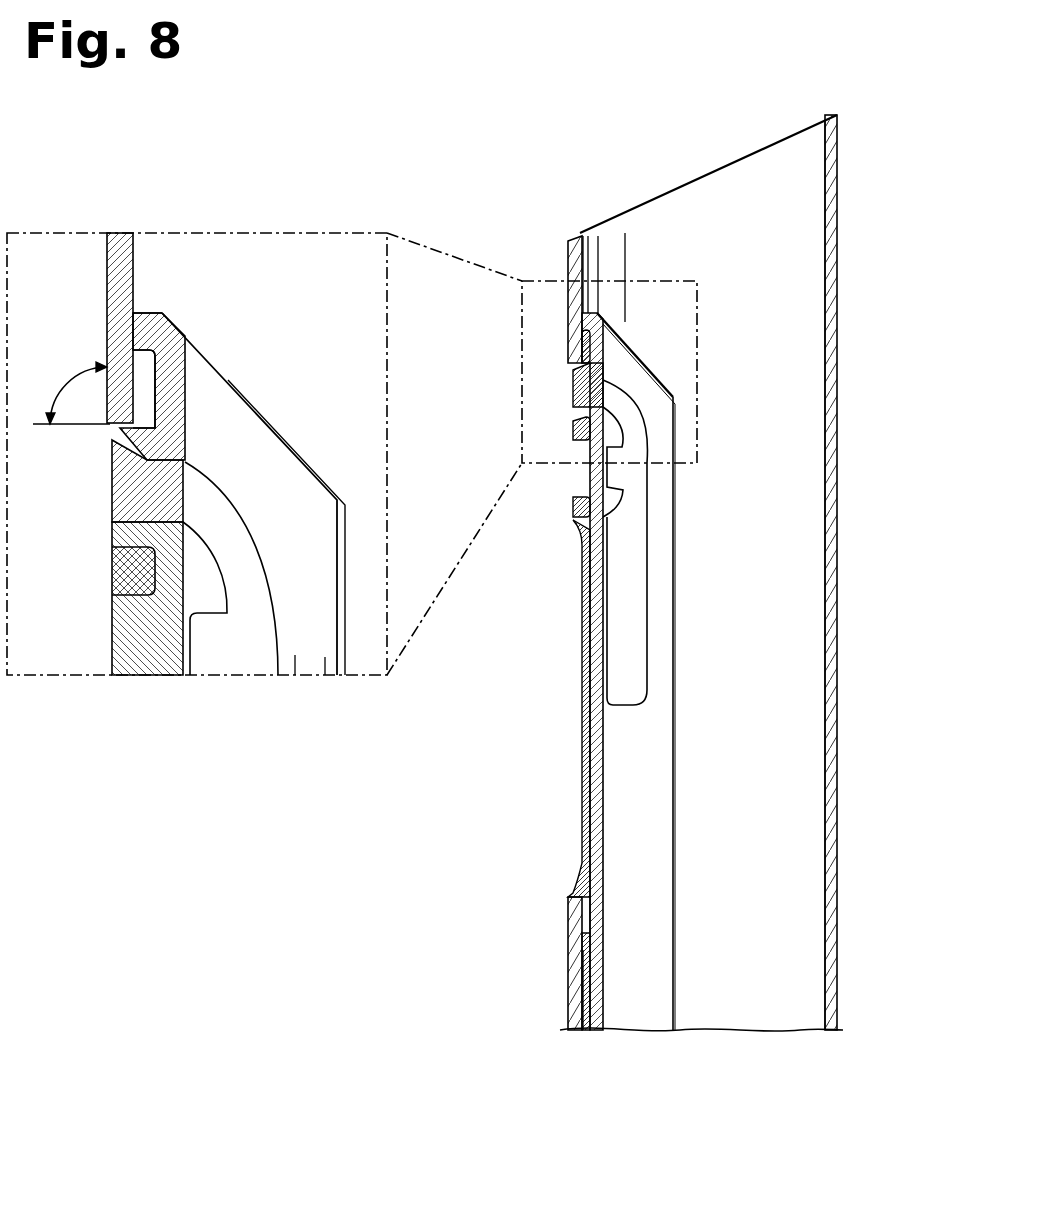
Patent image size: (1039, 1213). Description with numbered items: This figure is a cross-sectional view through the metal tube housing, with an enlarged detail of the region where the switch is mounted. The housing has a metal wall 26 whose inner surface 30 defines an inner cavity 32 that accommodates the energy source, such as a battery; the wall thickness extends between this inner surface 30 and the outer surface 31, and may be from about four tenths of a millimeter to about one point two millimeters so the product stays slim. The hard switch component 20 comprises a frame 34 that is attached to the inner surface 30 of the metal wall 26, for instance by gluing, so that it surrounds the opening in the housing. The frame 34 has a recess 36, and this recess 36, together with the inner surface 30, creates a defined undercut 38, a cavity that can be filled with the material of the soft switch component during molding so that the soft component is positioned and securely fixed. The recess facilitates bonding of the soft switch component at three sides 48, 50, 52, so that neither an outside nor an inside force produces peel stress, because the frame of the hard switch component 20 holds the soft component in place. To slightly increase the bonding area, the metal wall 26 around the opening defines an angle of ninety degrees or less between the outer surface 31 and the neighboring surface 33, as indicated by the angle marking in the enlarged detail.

The hard switch component 20 is at (625, 762).
The metal wall 26 is at (830, 545).
The inner surface 30 is at (822, 170).
The outer surface 31 is at (838, 330).
The inner cavity 32 is at (780, 750).
The neighboring surface 33 is at (113, 440).
The frame 34 is at (325, 660).
The recess 36 is at (168, 318).
The undercut 38 is at (147, 393).
The side 48 is at (153, 368).
The side 50 is at (141, 312).
The side 52 is at (133, 363).